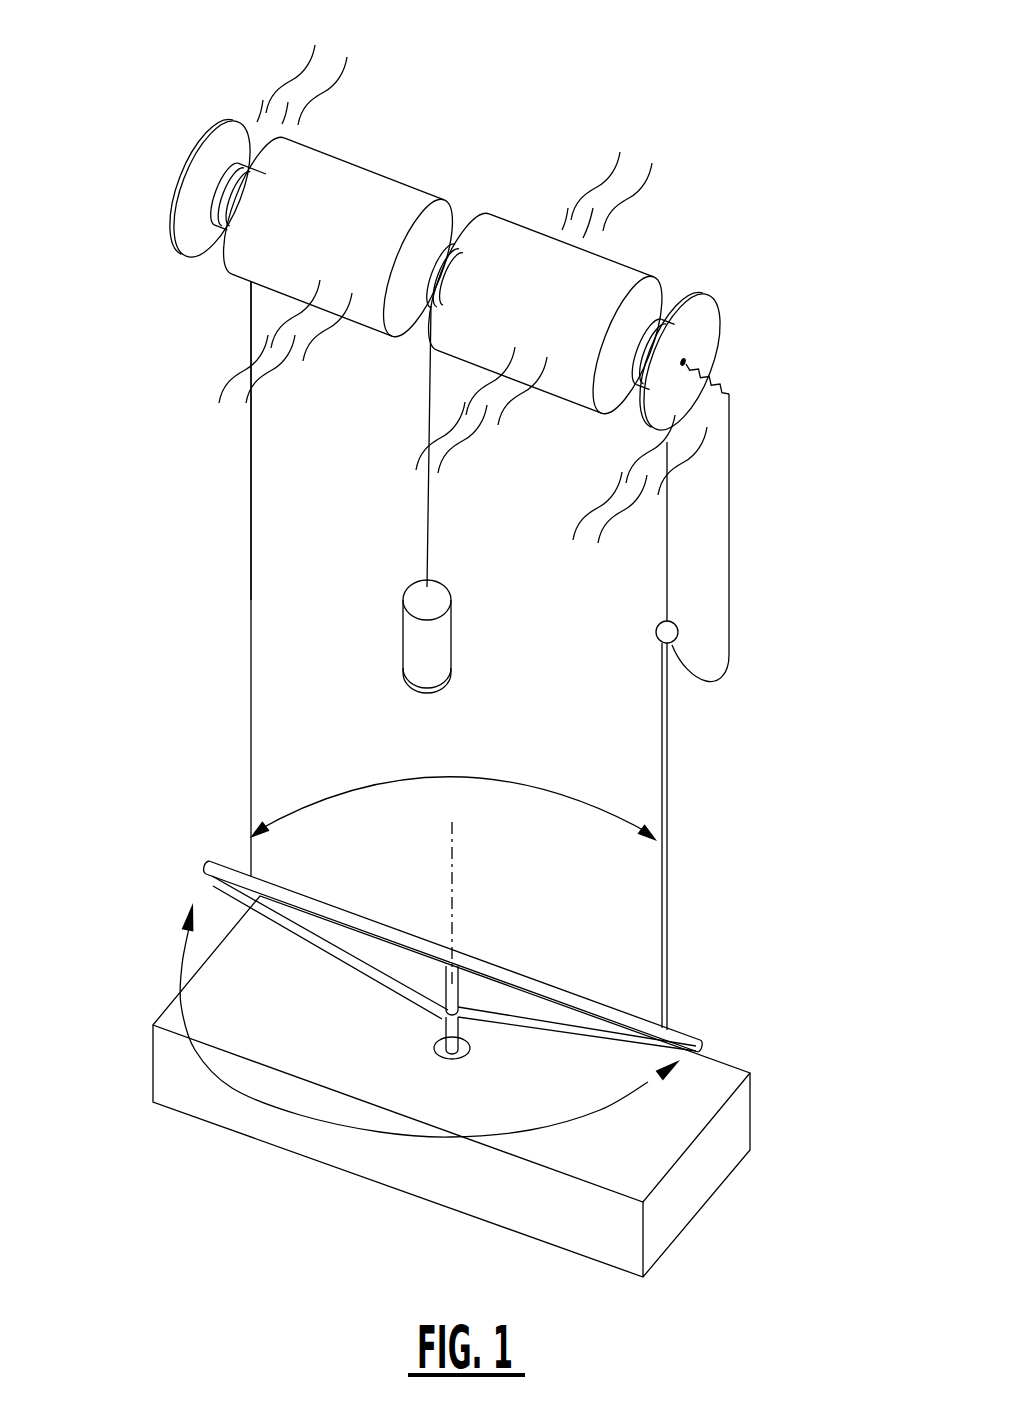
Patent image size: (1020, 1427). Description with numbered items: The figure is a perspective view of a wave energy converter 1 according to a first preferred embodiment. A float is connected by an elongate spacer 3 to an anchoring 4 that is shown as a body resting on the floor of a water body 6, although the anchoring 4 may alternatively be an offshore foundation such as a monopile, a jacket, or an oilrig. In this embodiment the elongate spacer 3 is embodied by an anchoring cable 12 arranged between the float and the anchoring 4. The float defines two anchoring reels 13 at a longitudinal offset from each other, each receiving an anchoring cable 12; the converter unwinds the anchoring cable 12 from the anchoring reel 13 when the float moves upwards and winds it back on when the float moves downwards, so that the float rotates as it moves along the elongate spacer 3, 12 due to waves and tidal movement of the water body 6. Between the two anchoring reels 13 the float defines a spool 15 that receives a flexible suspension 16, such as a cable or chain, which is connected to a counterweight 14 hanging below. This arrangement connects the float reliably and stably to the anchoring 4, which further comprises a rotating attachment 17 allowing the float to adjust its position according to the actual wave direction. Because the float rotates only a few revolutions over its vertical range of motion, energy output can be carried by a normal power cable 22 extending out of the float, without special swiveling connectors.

The wave energy converter 1 is at (665, 72).
The elongate spacer 3 is at (250, 703).
The anchoring 4 is at (163, 1069).
The water body 6 is at (284, 484).
The anchoring cable 12 is at (667, 592).
The anchoring reel 13 is at (210, 260).
The counterweight 14 is at (417, 645).
The spool 15 is at (464, 205).
The flexible suspension 16 is at (427, 523).
The rotating attachment 17 is at (377, 927).
The power cable 22 is at (729, 392).